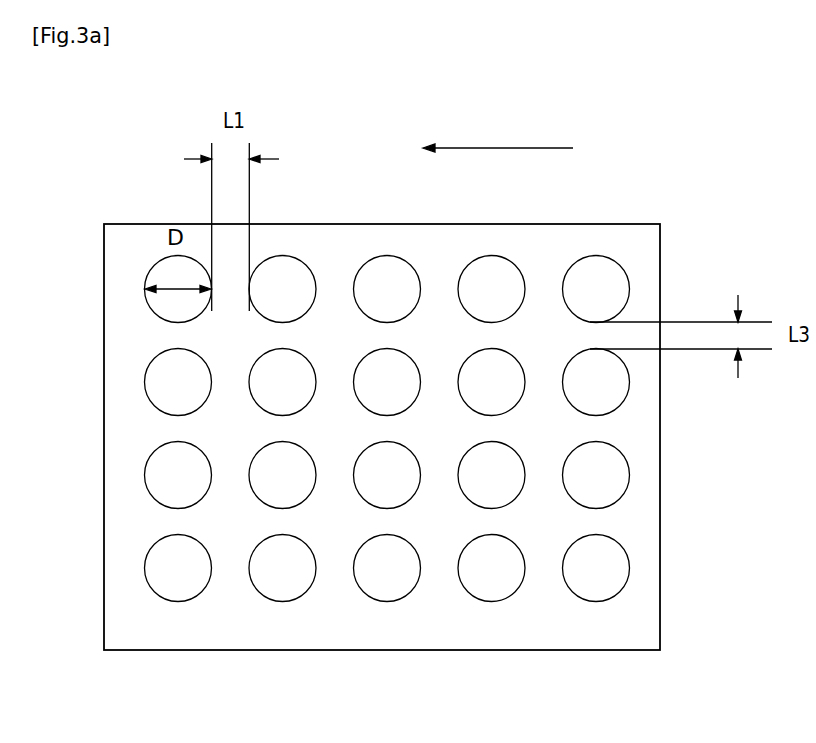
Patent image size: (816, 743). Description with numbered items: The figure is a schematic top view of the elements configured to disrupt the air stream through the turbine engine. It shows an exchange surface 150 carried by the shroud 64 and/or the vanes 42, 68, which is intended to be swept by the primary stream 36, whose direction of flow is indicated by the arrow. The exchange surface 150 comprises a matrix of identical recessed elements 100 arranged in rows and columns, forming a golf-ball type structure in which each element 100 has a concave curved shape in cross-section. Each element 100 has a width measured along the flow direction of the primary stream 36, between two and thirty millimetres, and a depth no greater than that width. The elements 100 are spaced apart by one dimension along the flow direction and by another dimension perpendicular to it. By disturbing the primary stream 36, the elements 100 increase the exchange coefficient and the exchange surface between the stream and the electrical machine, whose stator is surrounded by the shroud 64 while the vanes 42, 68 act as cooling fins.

The primary stream 36 is at (502, 148).
The element 100 is at (490, 285).
The exchange surface 150 is at (647, 605).
The shroud 64 is at (366, 465).
The vane 42 is at (366, 465).
The vane 68 is at (142, 630).